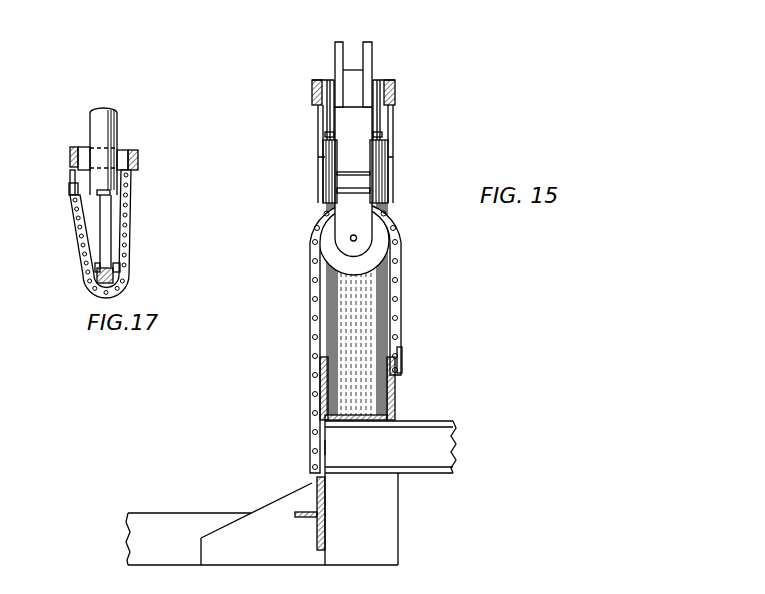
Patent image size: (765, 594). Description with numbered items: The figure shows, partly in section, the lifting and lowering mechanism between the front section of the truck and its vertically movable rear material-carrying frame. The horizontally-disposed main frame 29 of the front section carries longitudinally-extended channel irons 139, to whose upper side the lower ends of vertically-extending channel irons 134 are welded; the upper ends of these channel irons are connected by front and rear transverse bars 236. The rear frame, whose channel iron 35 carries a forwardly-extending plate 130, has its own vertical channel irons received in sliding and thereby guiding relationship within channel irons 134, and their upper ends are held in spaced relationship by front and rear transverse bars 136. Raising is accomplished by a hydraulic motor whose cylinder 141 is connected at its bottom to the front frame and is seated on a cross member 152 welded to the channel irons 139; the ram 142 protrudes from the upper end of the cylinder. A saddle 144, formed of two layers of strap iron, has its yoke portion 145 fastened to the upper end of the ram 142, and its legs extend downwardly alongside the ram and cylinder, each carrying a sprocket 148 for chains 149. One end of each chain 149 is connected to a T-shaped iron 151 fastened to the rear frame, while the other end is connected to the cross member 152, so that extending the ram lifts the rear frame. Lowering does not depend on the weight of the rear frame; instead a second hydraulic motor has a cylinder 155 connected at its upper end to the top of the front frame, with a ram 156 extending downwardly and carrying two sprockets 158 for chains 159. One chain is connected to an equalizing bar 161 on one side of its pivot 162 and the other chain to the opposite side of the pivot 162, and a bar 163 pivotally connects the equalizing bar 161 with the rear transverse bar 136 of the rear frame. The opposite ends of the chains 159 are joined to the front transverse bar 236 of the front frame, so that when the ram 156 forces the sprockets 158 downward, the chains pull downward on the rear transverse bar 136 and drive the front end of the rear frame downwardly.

In FIG. 15, the main frame 29 is at (443, 437).
In FIG. 15, the channel iron 35 is at (178, 512).
In FIG. 15, the forwardly-extending plate 130 is at (292, 492).
In FIG. 15, the channel iron 134 is at (383, 543).
In FIG. 15, the transverse bar 136 is at (312, 88).
In FIG. 17, the transverse bar 136 is at (70, 153).
In FIG. 15, the longitudinally-extended channel iron 139 is at (443, 473).
In FIG. 15, the cylinder 141 is at (345, 288).
In FIG. 15, the ram 142 is at (330, 113).
In FIG. 15, the saddle 144 is at (375, 50).
In FIG. 15, the yoke portion 145 is at (344, 62).
In FIG. 15, the sprocket 148 is at (380, 233).
In FIG. 15, the chain 149 is at (401, 287).
In FIG. 15, the T-shaped iron 151 is at (325, 525).
In FIG. 15, the cross member 152 is at (400, 390).
In FIG. 17, the cylinder 155 is at (112, 127).
In FIG. 17, the ram 156 is at (95, 258).
In FIG. 17, the sprocket 158 is at (92, 272).
In FIG. 17, the chain 159 is at (100, 243).
In FIG. 17, the equalizing bar 161 is at (73, 197).
In FIG. 17, the pivot 162 is at (70, 188).
In FIG. 17, the bar 163 is at (72, 168).
In FIG. 15, the transverse bar 236 is at (318, 103).
In FIG. 17, the transverse bar 236 is at (80, 148).